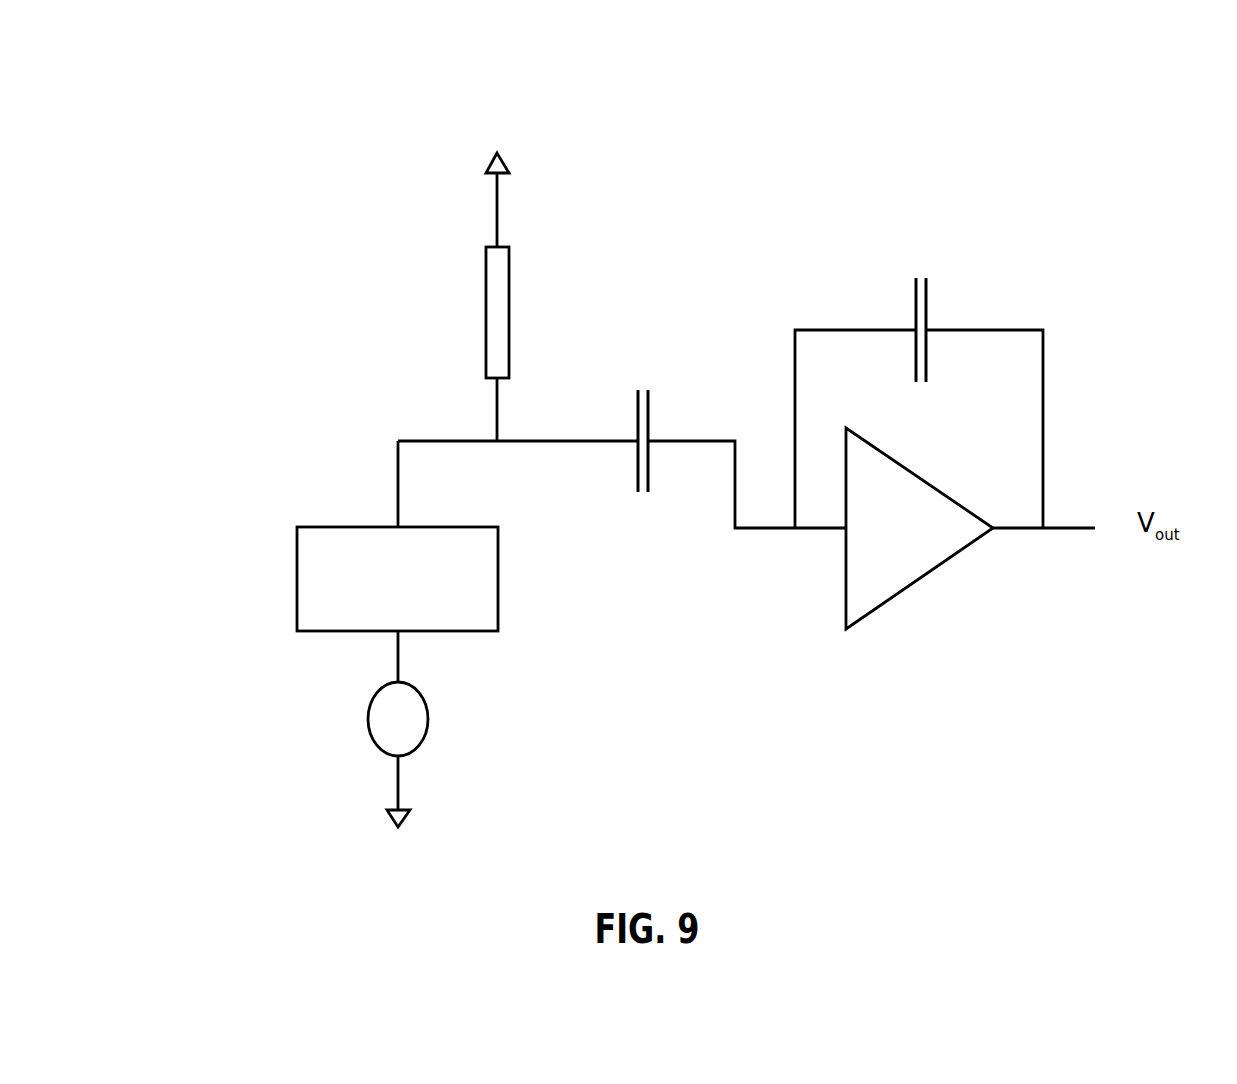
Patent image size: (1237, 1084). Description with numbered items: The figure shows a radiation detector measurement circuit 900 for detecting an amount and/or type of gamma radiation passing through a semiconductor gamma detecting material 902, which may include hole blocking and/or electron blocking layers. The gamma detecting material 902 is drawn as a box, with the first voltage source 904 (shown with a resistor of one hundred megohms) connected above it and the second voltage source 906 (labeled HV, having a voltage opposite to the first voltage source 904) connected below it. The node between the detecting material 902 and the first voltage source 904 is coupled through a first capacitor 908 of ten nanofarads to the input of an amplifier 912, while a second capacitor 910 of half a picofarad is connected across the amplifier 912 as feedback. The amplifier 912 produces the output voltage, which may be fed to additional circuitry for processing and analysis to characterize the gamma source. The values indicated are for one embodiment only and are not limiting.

The radiation detector measurement circuit 900 is at (1166, 188).
The semiconductor gamma detecting material 902 is at (297, 595).
The first voltage source 904 is at (486, 352).
The second voltage source 906 is at (367, 738).
The first capacitor 908 is at (650, 405).
The second capacitor 910 is at (916, 310).
The amplifier 912 is at (845, 617).